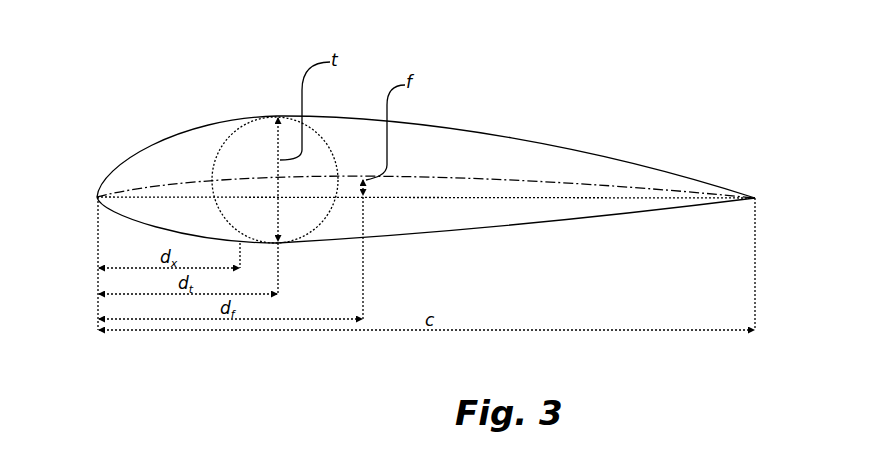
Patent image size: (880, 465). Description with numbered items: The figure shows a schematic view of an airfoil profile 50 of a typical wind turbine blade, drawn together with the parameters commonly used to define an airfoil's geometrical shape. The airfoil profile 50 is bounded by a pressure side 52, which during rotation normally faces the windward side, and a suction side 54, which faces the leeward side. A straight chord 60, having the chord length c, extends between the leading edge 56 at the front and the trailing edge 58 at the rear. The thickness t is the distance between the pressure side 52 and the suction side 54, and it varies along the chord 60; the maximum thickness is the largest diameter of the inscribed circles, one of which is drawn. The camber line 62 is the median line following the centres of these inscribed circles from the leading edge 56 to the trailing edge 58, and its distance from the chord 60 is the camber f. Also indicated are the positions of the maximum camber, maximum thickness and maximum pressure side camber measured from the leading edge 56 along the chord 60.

The airfoil profile 50 is at (426, 139).
The pressure side 52 is at (557, 222).
The suction side 54 is at (507, 130).
The leading edge 56 is at (97, 197).
The trailing edge 58 is at (755, 197).
The chord 60 is at (588, 196).
The camber line 62 is at (420, 172).